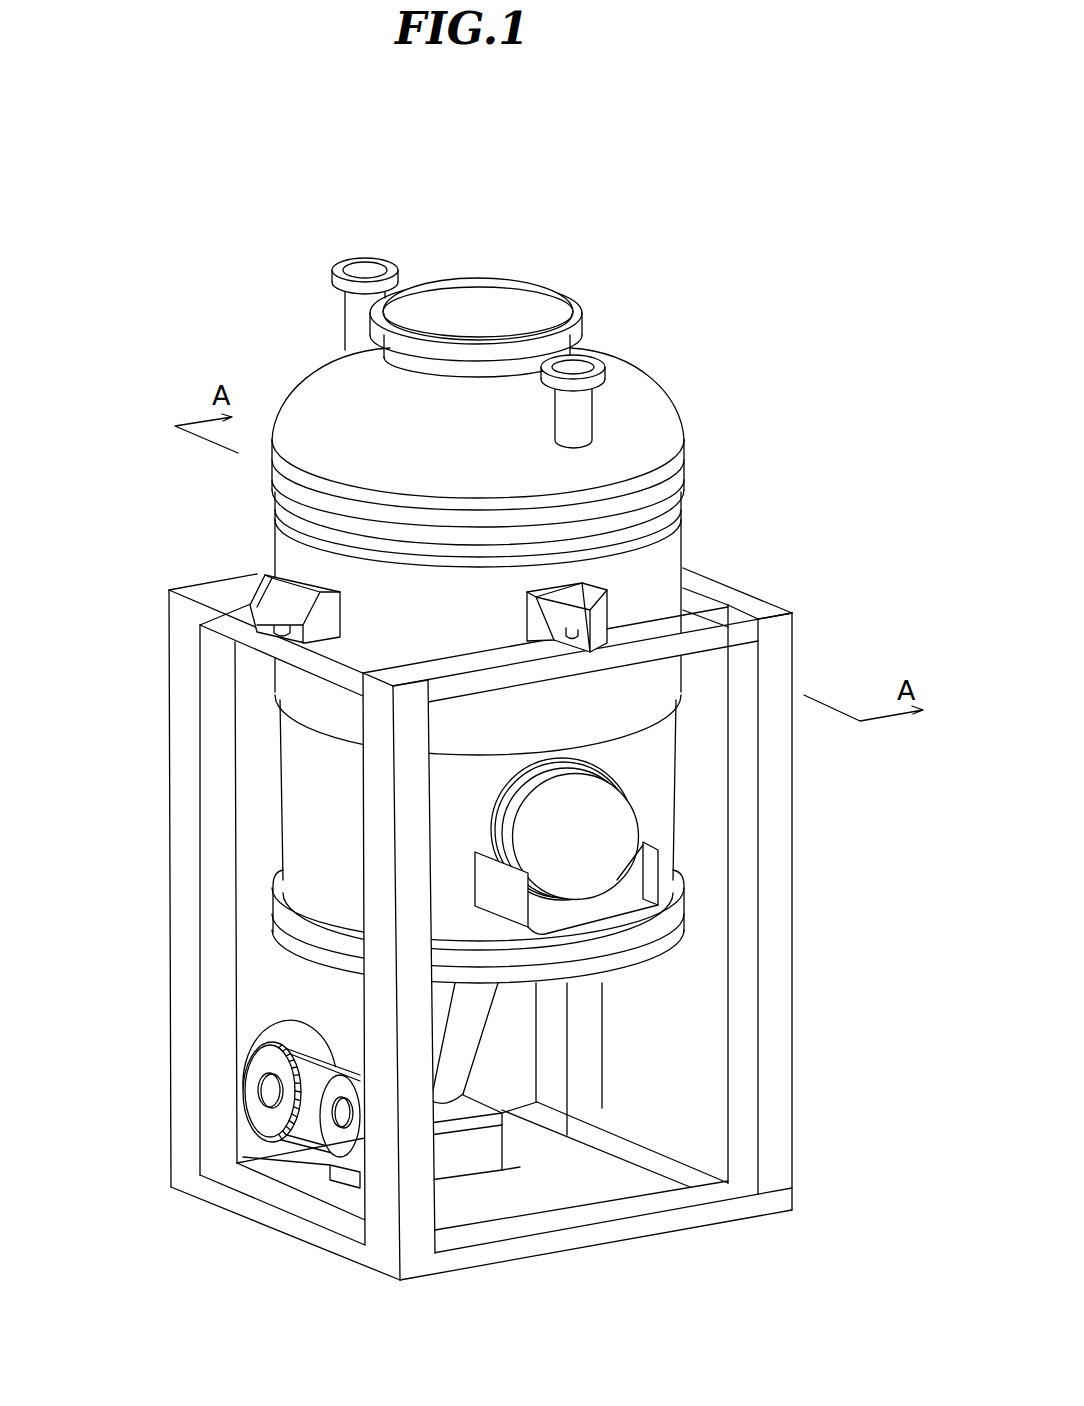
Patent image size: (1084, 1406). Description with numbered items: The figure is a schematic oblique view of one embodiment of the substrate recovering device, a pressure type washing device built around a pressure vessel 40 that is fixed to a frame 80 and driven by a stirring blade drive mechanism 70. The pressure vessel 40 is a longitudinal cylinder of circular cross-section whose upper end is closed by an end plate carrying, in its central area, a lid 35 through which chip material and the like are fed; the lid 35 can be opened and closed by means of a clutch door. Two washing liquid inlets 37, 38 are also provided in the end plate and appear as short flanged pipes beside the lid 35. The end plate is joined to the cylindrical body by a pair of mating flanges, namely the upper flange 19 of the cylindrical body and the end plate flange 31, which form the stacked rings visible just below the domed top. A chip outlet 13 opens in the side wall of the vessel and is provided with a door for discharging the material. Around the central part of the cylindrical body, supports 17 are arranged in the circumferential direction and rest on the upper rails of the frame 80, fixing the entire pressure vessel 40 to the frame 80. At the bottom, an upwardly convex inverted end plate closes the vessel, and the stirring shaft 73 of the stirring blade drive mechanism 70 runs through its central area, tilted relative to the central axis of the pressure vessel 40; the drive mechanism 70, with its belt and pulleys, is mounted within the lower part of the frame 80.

The chip outlet 13 is at (597, 818).
The support 17 is at (300, 597).
The upper flange of the cylindrical body 19 is at (684, 487).
The end plate flange 31 is at (683, 442).
The lid 35 is at (507, 297).
The washing liquid inlet 37 is at (355, 268).
The washing liquid inlet 38 is at (582, 363).
The pressure vessel 40 is at (562, 579).
The stirring blade drive mechanism 70 is at (257, 1087).
The stirring shaft 73 is at (462, 1047).
The frame 80 is at (778, 1162).